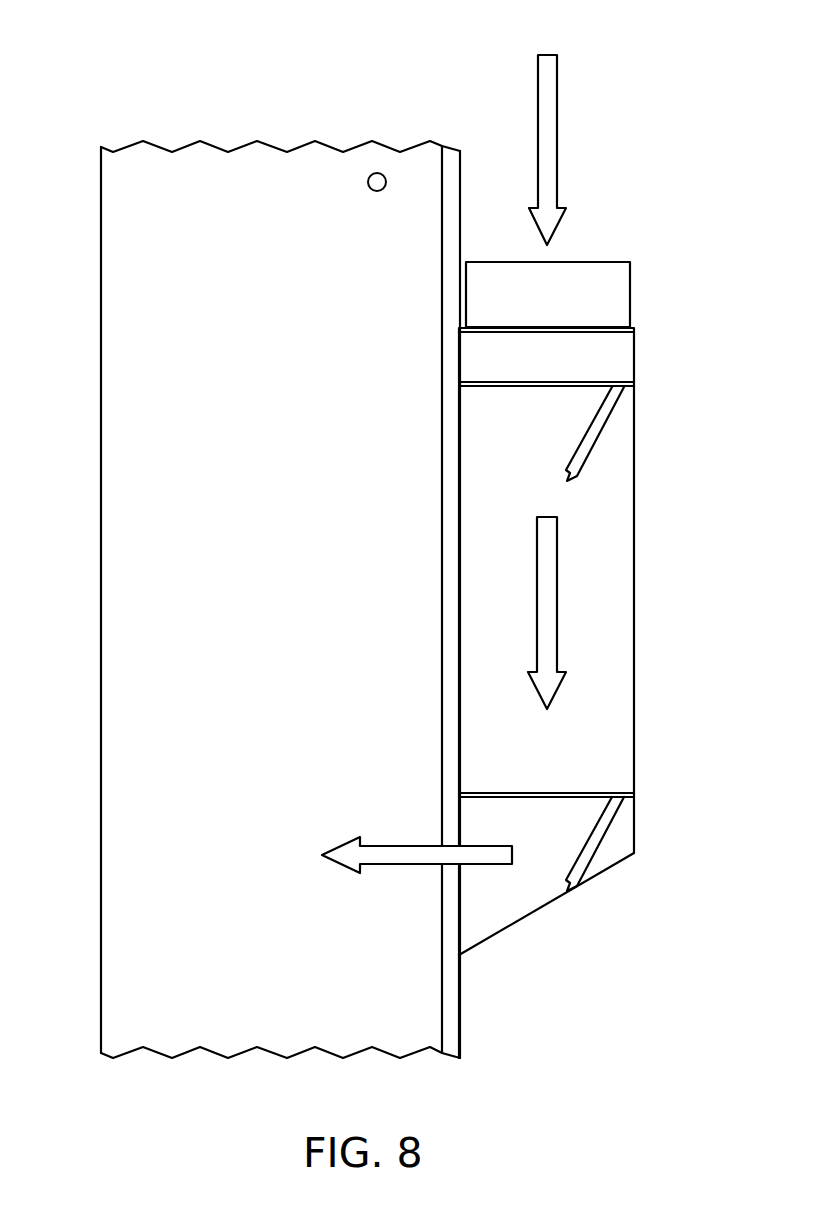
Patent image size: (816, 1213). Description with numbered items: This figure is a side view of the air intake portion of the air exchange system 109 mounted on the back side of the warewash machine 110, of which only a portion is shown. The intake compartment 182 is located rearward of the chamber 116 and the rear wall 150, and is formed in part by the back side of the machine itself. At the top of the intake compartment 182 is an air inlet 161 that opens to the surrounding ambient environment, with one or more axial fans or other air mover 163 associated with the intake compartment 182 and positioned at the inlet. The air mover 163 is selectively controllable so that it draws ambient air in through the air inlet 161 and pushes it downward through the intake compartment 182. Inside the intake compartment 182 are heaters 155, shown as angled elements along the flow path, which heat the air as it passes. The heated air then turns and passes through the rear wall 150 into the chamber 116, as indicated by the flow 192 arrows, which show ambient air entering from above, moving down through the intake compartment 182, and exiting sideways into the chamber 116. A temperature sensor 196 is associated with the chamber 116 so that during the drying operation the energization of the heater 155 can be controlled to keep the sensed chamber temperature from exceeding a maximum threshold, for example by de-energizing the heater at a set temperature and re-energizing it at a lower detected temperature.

The warewash machine 110 is at (249, 537).
The chamber 116 is at (258, 560).
The temperature sensor 196 is at (375, 192).
The air exchange system 109 is at (536, 556).
The air mover 163 is at (630, 294).
The air inlet 161 is at (517, 329).
The rear wall 150 is at (448, 360).
The intake compartment 182 is at (622, 643).
The heater 155 is at (582, 440).
The flow 192 is at (550, 120).